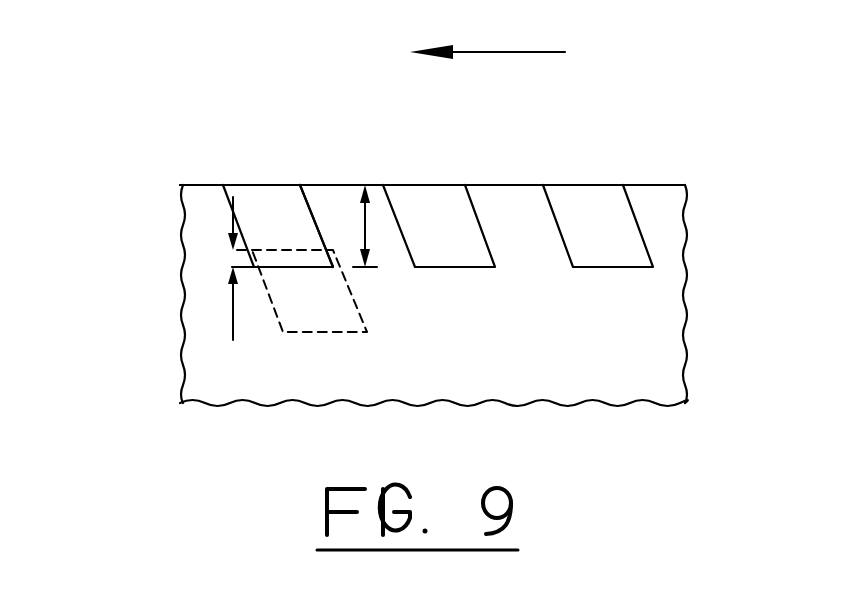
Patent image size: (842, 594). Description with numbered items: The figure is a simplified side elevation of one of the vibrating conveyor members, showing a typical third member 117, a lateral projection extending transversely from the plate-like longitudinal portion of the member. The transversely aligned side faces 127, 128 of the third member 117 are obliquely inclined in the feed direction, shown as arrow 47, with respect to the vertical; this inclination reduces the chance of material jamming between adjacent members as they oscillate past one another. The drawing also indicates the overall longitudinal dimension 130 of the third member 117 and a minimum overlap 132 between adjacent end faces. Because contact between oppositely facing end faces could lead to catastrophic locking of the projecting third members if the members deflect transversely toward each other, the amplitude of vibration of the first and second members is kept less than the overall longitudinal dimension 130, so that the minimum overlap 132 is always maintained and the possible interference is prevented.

The feed direction arrow 47 is at (498, 52).
The third member 117 is at (272, 192).
The side face 128 is at (311, 213).
The side face 127 is at (223, 187).
The overall longitudinal dimension 130 is at (365, 223).
The minimum overlap 132 is at (233, 320).